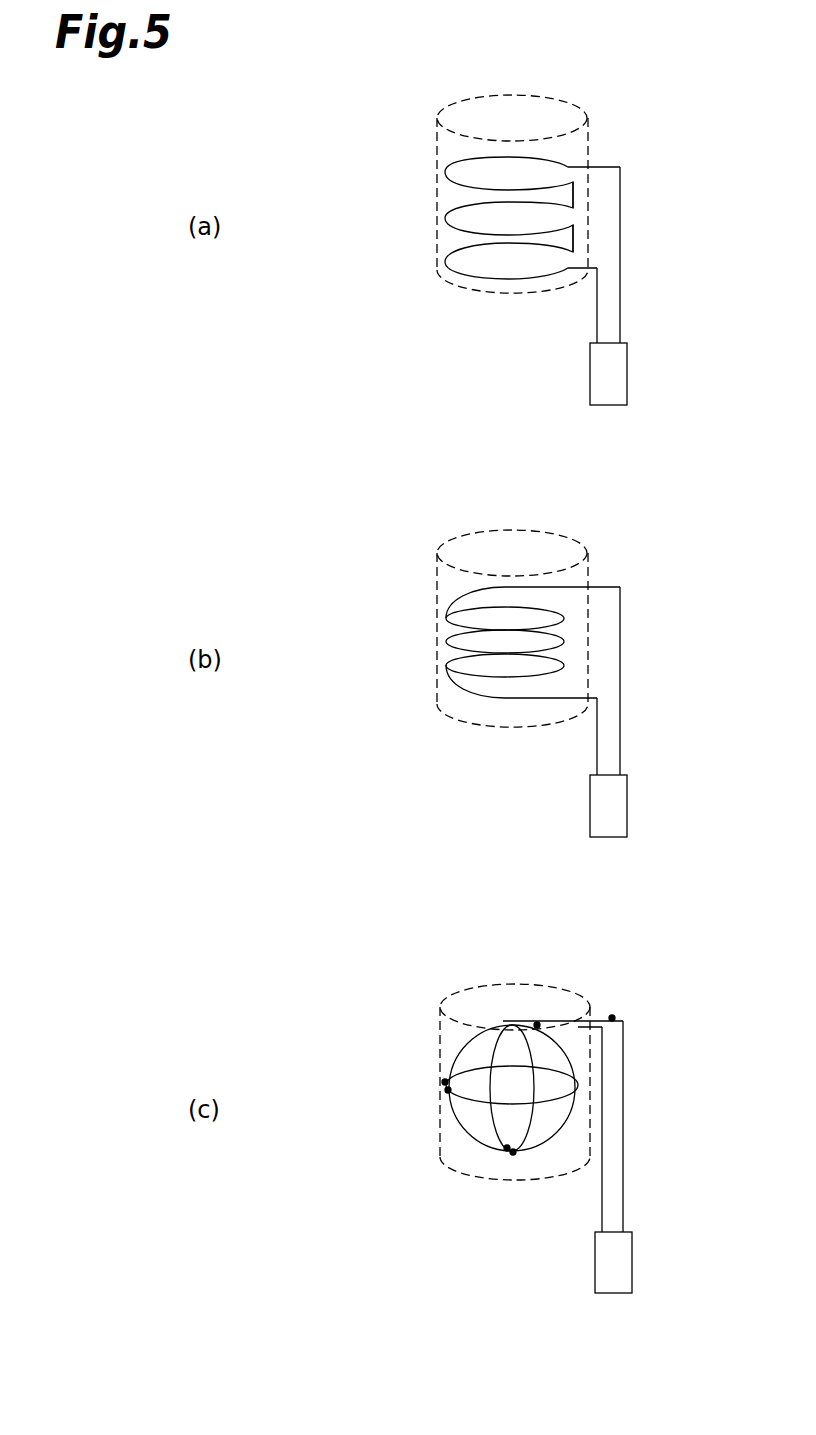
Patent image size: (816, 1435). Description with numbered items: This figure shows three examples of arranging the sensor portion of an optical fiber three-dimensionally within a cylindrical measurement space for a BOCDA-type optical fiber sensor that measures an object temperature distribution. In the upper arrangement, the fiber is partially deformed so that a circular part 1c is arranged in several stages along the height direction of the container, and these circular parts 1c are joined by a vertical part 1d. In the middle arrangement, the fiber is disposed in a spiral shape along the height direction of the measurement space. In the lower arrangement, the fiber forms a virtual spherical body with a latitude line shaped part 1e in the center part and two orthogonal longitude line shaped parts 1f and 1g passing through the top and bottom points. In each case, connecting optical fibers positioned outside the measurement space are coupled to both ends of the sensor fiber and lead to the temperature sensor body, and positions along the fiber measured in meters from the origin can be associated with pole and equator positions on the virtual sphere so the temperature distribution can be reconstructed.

The circular part 1c is at (445, 260).
The vertical part 1d is at (576, 195).
The latitude line shaped part 1e is at (475, 1106).
The longitude line shaped part 1f is at (455, 1055).
The longitude line shaped part 1g is at (492, 1130).